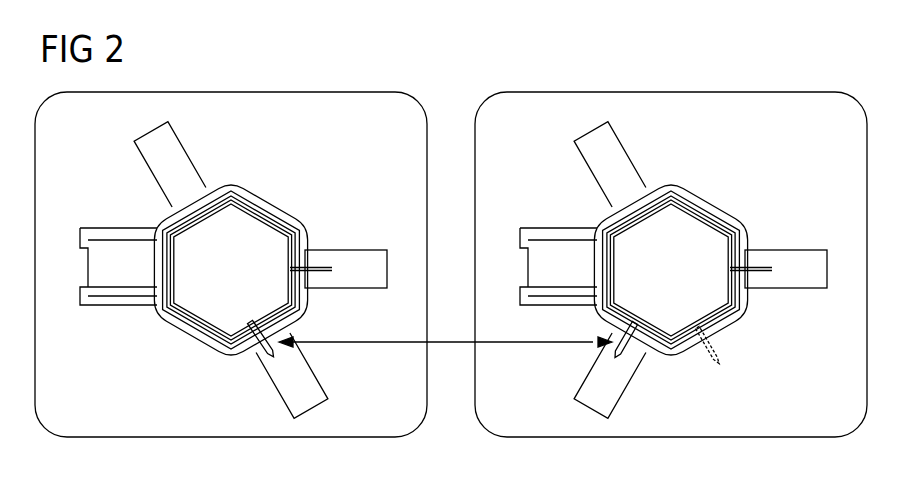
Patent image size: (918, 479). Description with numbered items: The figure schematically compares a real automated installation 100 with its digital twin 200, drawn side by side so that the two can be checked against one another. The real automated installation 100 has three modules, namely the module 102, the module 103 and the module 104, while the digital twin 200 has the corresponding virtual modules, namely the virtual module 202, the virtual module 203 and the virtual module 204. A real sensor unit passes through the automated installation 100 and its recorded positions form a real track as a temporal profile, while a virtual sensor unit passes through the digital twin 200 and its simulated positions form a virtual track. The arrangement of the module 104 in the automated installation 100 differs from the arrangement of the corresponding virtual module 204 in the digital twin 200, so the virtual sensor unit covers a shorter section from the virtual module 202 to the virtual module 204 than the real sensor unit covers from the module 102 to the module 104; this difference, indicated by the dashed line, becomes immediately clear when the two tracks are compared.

The automated installation 100 is at (333, 112).
The module 102 is at (345, 258).
The module 103 is at (179, 152).
The module 104 is at (270, 388).
The digital twin 200 is at (773, 112).
The virtual module 202 is at (785, 258).
The virtual module 203 is at (619, 152).
The virtual module 204 is at (621, 380).